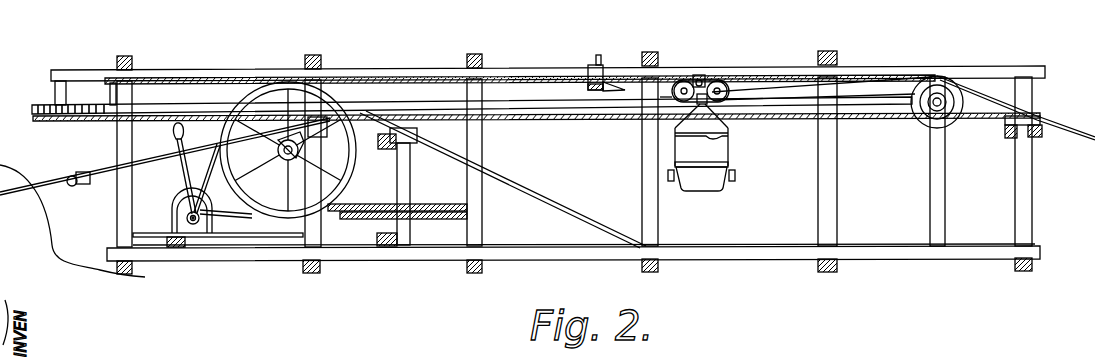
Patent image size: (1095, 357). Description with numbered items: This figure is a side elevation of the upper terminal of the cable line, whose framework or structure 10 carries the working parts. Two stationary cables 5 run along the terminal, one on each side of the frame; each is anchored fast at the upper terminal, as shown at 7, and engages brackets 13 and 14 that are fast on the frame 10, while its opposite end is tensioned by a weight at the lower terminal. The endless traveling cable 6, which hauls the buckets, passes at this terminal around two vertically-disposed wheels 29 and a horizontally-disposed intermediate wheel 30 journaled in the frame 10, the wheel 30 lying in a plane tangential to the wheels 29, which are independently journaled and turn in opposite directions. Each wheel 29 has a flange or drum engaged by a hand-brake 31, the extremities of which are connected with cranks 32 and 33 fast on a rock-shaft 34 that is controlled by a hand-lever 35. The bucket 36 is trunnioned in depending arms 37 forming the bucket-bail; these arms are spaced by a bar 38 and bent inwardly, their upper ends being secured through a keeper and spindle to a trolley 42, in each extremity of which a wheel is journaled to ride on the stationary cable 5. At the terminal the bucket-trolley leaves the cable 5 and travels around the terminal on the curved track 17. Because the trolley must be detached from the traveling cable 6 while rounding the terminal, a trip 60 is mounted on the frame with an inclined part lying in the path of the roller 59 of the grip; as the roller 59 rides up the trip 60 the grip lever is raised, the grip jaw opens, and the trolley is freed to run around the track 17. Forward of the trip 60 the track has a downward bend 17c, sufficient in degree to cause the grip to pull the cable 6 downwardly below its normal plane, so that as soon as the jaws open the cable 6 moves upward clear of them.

The stationary cable 5 is at (578, 118).
The endless traveling cable 6 is at (527, 78).
The cable anchorage 7 is at (8, 180).
The upper terminal framework 10 is at (548, 171).
The bracket 13 is at (328, 120).
The bracket 14 is at (1010, 126).
The upper terminal track 17 is at (173, 108).
The downward bend of the track 17c is at (672, 103).
The vertically-disposed wheel 29 is at (263, 90).
The horizontally-disposed intermediate wheel 30 is at (425, 205).
The hand-brake 31 is at (227, 221).
The crank 32 is at (173, 213).
The crank 33 is at (193, 206).
The rock-shaft 34 is at (200, 234).
The hand-lever 35 is at (171, 132).
The bucket 36 is at (701, 176).
The depending arms 37 is at (730, 157).
The spacing bar 38 is at (735, 135).
The trolley 42 is at (712, 97).
The roller of the grip 59 is at (701, 76).
The trip 60 is at (651, 20).